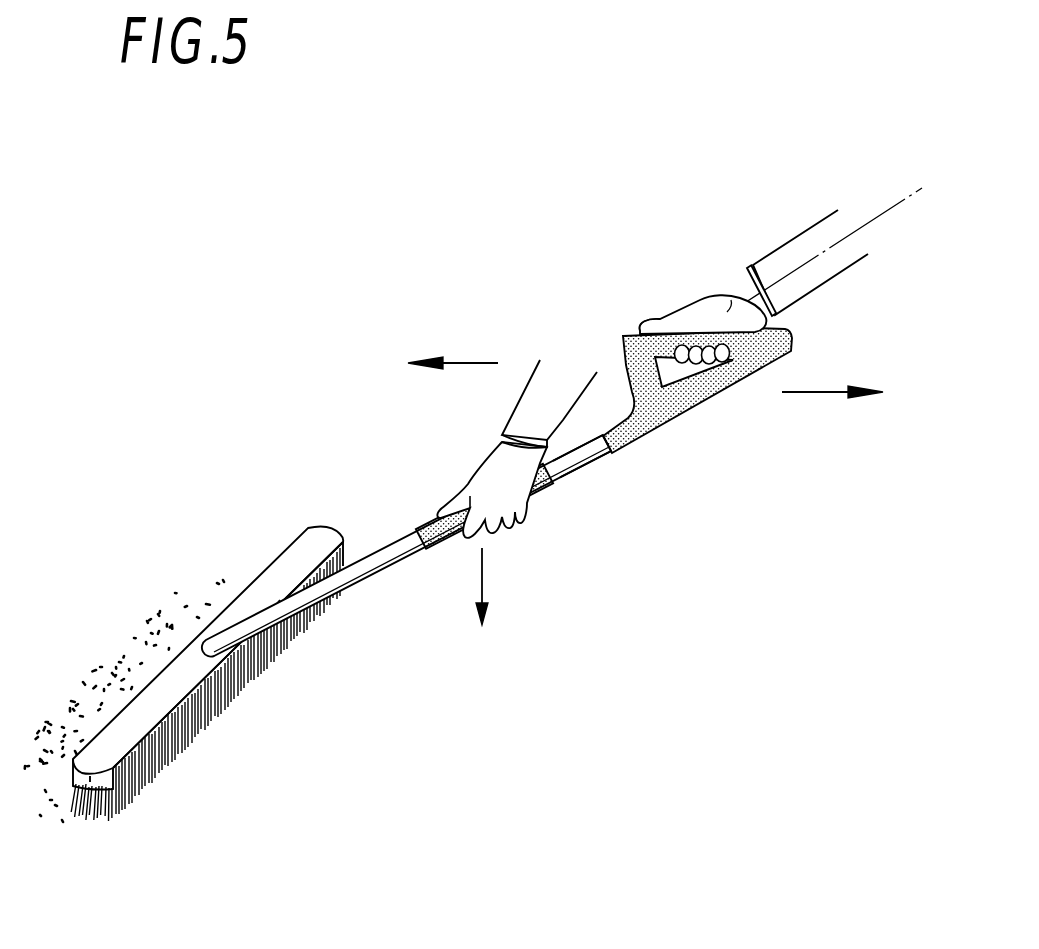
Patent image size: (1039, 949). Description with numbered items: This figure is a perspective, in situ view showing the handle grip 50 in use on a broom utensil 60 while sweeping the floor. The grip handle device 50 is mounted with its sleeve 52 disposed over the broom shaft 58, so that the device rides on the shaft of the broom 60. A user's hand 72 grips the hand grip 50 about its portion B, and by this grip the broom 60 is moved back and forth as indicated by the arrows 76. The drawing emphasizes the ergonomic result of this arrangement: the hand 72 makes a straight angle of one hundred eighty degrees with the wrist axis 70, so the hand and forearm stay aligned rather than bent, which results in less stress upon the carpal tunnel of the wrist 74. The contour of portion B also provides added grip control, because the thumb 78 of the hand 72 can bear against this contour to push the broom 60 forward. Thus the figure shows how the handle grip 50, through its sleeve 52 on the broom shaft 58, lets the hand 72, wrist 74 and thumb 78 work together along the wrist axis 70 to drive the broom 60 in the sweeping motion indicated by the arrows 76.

The handle grip 50 is at (696, 411).
The sleeve 52 is at (632, 430).
The broom shaft 58 is at (575, 460).
The broom utensil 60 is at (281, 545).
The wrist axis 70 is at (868, 222).
The hand 72 is at (705, 303).
The wrist 74 is at (763, 268).
The arrows 76 is at (473, 363).
The thumb 78 is at (655, 320).